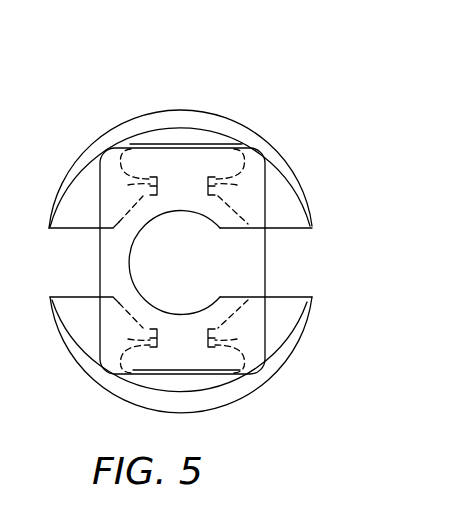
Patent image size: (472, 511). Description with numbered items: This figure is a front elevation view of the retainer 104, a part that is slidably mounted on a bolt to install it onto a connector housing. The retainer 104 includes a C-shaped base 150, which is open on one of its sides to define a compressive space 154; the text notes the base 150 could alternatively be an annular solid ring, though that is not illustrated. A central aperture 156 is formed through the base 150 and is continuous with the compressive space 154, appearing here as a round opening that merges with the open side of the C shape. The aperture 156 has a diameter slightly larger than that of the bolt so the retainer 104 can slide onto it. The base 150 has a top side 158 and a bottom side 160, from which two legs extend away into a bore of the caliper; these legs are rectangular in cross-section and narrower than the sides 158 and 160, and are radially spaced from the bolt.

The retainer 104 is at (197, 93).
The base 150 is at (232, 296).
The compressive space 154 is at (282, 245).
The central aperture 156 is at (174, 263).
The top side 158 is at (192, 165).
The bottom side 160 is at (198, 360).